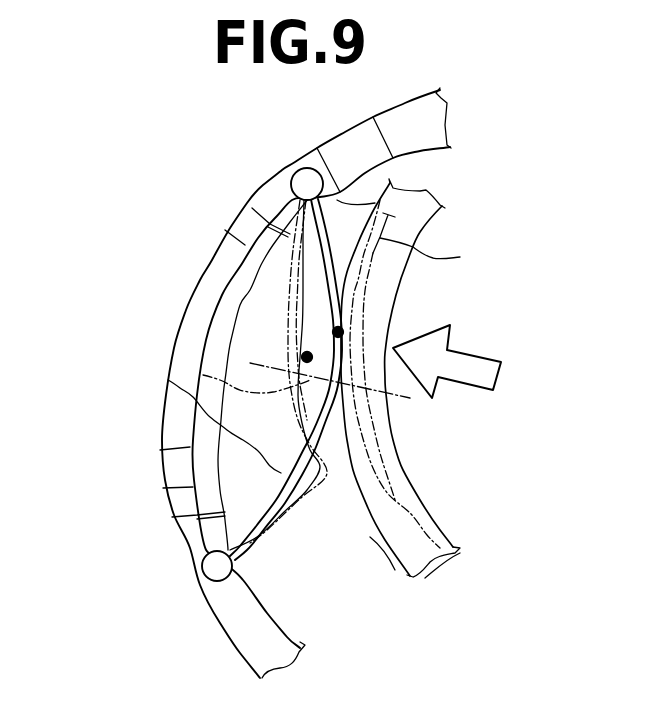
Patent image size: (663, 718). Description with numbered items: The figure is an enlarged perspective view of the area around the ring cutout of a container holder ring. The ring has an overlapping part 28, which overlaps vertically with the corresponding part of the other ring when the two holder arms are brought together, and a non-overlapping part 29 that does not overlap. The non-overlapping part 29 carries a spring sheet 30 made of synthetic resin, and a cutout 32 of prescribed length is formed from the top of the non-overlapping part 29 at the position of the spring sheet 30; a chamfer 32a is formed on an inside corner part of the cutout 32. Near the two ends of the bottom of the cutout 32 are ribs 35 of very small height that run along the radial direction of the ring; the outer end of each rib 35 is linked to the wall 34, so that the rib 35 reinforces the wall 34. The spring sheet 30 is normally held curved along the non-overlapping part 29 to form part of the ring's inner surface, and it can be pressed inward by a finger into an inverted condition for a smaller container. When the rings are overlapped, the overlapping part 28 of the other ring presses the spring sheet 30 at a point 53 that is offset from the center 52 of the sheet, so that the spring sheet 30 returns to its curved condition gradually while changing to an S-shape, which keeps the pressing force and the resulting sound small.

The overlapping part 28 is at (393, 303).
The non-overlapping part 29 is at (212, 614).
The spring sheet 30 is at (203, 375).
The cutout 32 is at (195, 295).
The chamfer 32a is at (220, 472).
The wall 34 is at (278, 187).
The rib 35 is at (268, 226).
The center 52 is at (250, 363).
The point 53 is at (307, 357).